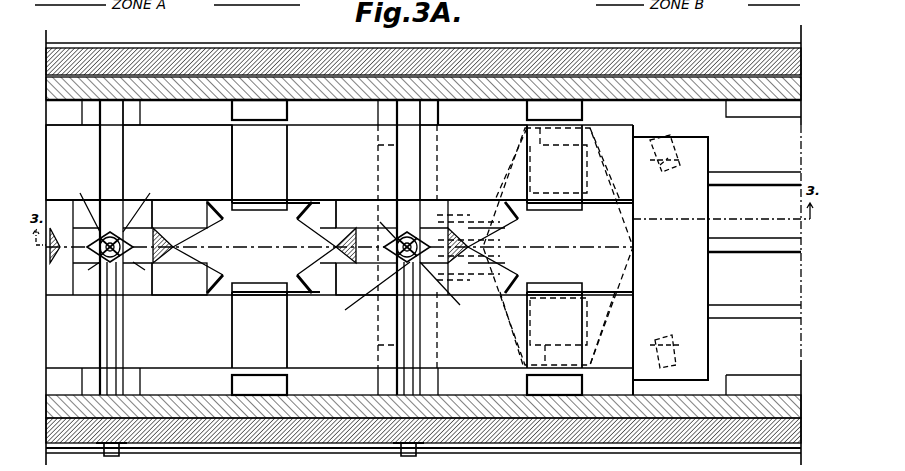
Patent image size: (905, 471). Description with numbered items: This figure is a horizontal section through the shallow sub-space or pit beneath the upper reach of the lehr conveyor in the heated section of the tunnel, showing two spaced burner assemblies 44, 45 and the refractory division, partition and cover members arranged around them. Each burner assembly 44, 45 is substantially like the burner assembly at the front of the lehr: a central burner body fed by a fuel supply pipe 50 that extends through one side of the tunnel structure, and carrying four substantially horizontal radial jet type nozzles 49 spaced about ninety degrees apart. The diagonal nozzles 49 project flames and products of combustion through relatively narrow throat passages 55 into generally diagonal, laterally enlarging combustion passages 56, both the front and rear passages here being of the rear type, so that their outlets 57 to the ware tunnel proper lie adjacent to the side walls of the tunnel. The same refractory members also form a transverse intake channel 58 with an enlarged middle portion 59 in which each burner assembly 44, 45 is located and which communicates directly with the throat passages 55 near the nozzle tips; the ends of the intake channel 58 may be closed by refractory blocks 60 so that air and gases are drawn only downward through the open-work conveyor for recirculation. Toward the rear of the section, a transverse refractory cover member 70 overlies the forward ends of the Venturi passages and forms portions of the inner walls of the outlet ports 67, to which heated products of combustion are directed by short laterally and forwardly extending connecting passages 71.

The burner assembly 44 is at (120, 240).
The burner assembly 45 is at (407, 247).
The radial jet type nozzles 49 is at (270, 250).
The fuel supply pipe 50 is at (107, 324).
The throat passages 55 is at (508, 222).
The diagonal combustion passages 56 is at (380, 172).
The outlets 57 is at (233, 125).
The transverse intake channel 58 is at (118, 156).
The enlarged middle portion 59 is at (125, 250).
The refractory blocks 60 is at (140, 116).
The outlet ports 67 is at (630, 104).
The transverse refractory cover member 70 is at (702, 194).
The connecting passages 71 is at (665, 148).